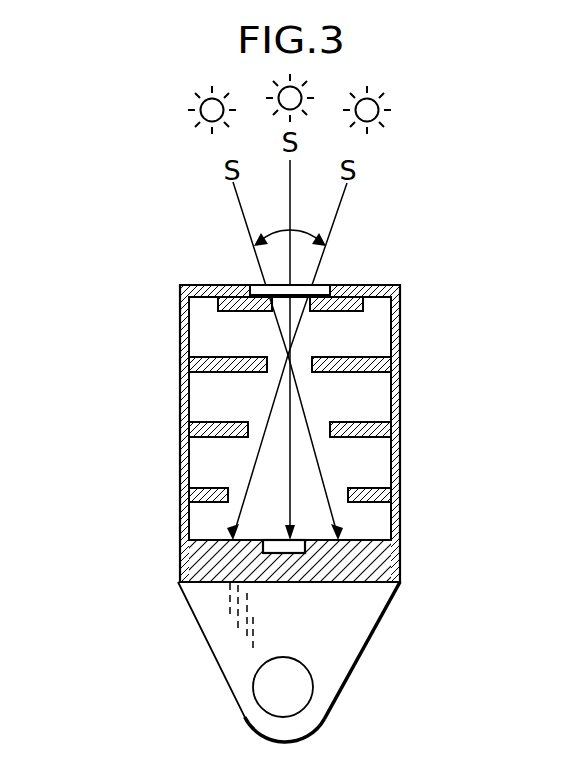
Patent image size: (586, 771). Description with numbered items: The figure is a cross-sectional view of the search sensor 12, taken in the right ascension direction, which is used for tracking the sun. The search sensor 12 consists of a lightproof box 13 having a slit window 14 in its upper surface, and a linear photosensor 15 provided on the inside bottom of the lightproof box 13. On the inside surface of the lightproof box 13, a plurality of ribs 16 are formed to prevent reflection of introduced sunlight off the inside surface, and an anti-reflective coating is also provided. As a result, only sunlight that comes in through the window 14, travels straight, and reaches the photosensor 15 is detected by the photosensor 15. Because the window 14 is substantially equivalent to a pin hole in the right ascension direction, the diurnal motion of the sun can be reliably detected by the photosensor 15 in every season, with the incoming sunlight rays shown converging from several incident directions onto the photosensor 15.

The search sensor 12 is at (164, 373).
The lightproof box 13 is at (179, 457).
The slit window 14 is at (327, 282).
The linear photosensor 15 is at (294, 553).
The ribs 16 is at (367, 372).